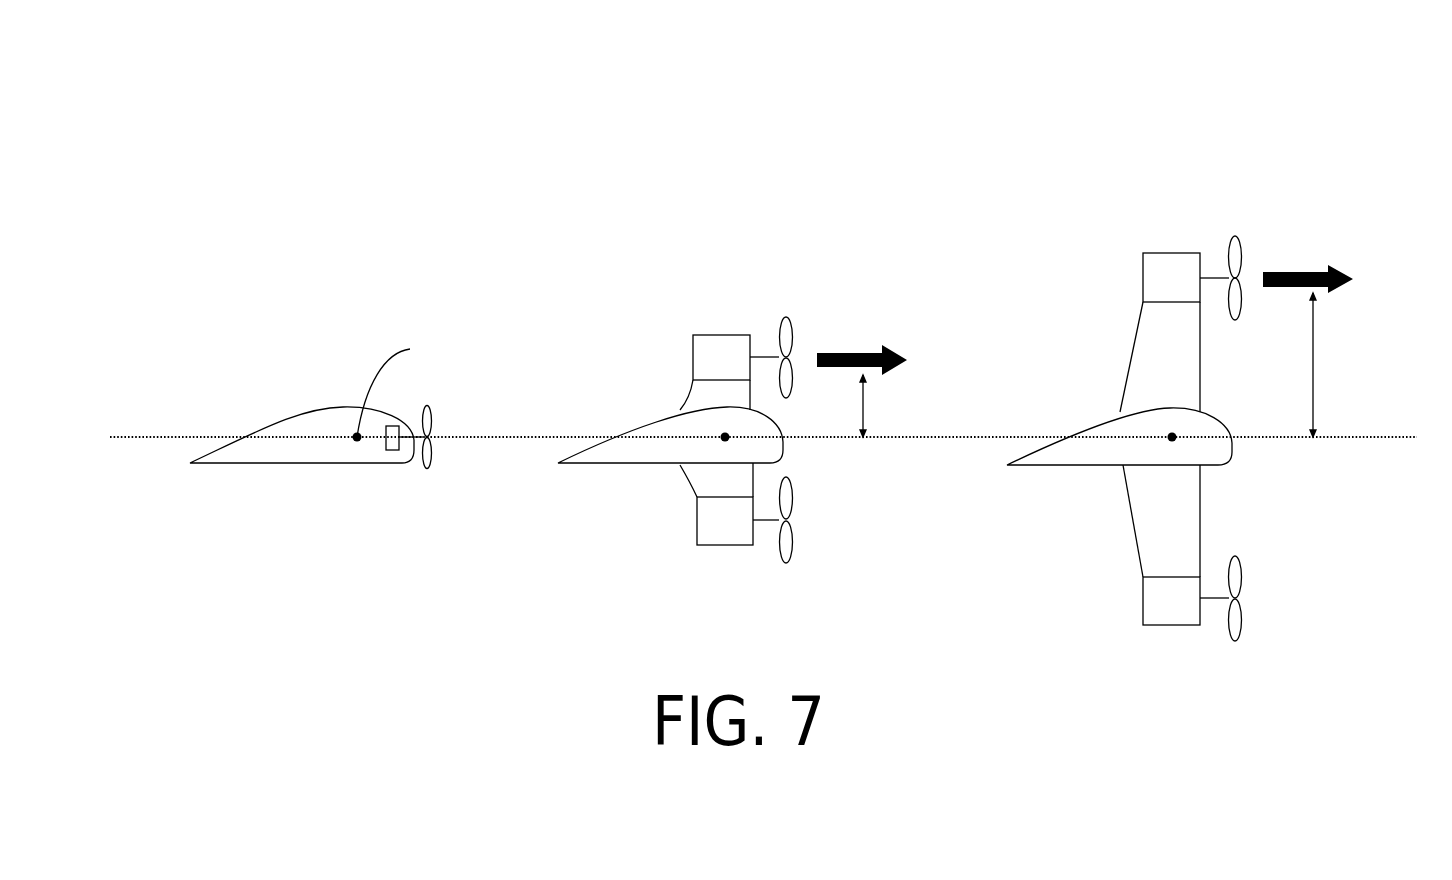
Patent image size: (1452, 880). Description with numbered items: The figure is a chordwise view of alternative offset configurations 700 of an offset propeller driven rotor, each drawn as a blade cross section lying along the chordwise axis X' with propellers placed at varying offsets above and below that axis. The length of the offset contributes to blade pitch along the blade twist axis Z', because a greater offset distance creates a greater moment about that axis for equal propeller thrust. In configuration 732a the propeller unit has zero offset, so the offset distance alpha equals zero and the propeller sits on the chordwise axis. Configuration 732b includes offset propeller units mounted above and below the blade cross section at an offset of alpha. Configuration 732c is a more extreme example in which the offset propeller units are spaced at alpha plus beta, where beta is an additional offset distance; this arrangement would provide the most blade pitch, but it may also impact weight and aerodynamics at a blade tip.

The alternative offset configurations 700 is at (1445, 80).
The configuration with zero-offset propeller unit 732a is at (344, 313).
The configuration with offset propeller units 732b is at (747, 365).
The configuration with extreme offset propeller units 732c is at (1210, 404).